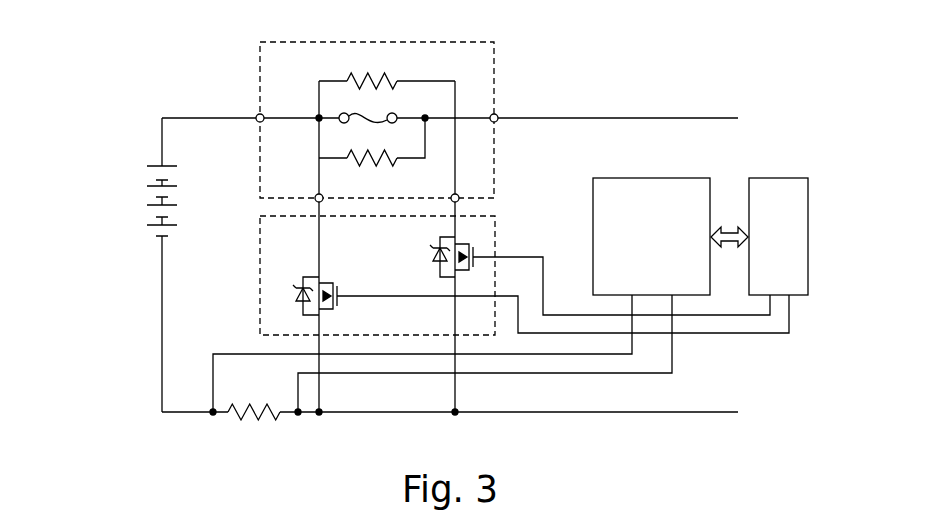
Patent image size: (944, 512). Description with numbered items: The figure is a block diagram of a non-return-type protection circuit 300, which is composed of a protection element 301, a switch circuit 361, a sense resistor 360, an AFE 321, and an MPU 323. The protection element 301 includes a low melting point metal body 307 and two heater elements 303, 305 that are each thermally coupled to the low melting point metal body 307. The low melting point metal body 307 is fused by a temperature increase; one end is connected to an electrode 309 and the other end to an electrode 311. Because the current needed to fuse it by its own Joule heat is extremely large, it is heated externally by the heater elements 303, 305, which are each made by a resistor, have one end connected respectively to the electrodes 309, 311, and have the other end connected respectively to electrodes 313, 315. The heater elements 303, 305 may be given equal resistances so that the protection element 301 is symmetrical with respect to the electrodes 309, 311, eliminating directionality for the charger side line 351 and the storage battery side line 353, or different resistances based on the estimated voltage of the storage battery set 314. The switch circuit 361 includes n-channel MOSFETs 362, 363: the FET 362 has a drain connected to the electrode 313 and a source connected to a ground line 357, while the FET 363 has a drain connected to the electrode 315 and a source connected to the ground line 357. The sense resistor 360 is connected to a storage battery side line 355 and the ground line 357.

The non-return-type protection circuit 300 is at (647, 53).
The protection element 301 is at (493, 42).
The heater element 303 is at (395, 74).
The heater element 305 is at (352, 148).
The low melting point metal body 307 is at (368, 112).
The electrode 309 is at (265, 114).
The electrode 311 is at (497, 116).
The electrode 313 is at (458, 196).
The storage battery set 314 is at (137, 170).
The electrode 315 is at (323, 197).
The AFE 321 is at (670, 178).
The MPU 323 is at (783, 178).
The charger side line 351 is at (667, 118).
The storage battery side line 353 is at (198, 117).
The storage battery side line 355 is at (162, 325).
The ground line 357 is at (602, 411).
The sense resistor 360 is at (250, 403).
The switch circuit 361 is at (496, 215).
The n-channel MOSFET 362 is at (440, 250).
The n-channel MOSFET 363 is at (325, 283).